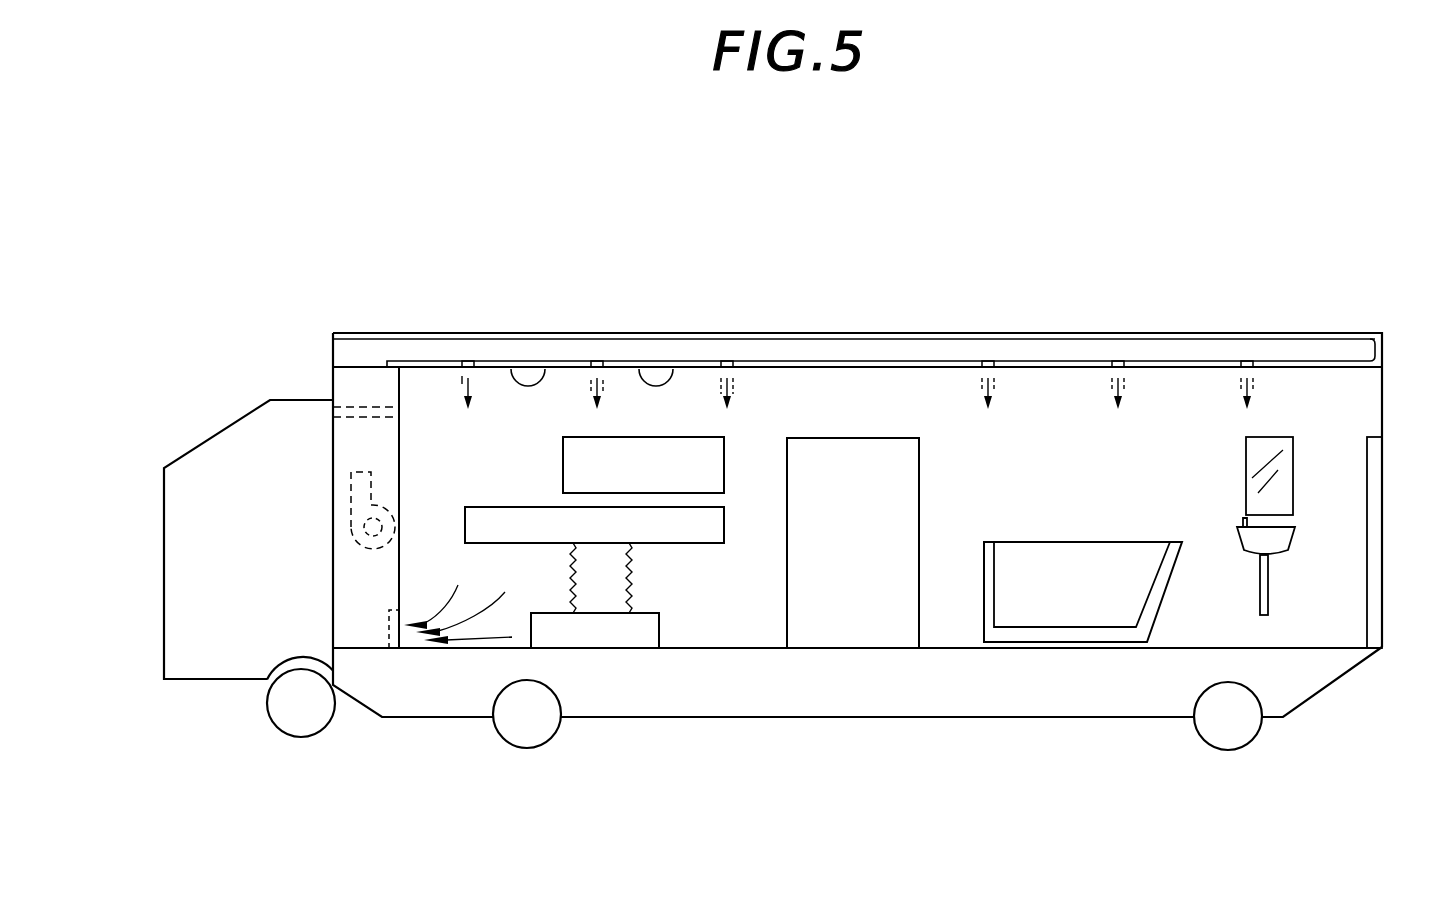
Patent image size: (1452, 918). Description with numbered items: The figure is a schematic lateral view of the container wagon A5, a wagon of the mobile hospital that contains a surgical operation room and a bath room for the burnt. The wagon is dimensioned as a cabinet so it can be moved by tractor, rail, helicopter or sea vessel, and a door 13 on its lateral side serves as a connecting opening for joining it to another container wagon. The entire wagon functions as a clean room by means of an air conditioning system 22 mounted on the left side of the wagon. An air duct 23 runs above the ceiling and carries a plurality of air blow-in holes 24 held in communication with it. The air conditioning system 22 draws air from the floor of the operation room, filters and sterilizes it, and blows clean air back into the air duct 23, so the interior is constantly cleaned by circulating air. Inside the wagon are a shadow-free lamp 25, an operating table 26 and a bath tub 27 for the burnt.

The container wagon A5 is at (930, 315).
The door (connecting opening) 13 is at (840, 557).
The air conditioning system 22 is at (338, 446).
The air duct 23 is at (633, 345).
The air blow-in holes 24 is at (471, 360).
The shadow-free lamp 25 is at (530, 368).
The operating table 26 is at (691, 530).
The bath tub for the burnt 27 is at (1095, 615).